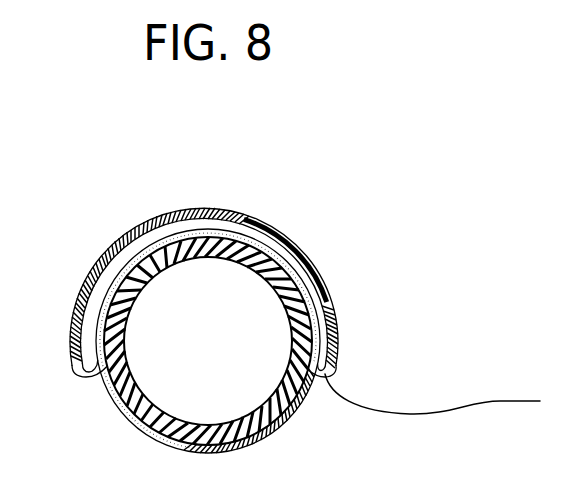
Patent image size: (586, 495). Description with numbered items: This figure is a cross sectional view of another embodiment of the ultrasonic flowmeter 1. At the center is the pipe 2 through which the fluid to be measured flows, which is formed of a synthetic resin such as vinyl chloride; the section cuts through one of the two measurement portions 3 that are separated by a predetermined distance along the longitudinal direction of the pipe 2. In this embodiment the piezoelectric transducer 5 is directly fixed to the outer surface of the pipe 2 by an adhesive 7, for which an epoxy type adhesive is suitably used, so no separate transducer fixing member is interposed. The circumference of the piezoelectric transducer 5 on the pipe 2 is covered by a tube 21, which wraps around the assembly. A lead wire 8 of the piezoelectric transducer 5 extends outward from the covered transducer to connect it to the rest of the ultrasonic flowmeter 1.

The ultrasonic flowmeter 1 is at (314, 206).
The pipe 2 is at (210, 437).
The measurement portion 3 is at (88, 217).
The piezoelectric transducer 5 is at (220, 227).
The adhesive 7 is at (305, 295).
The lead wire 8 is at (410, 413).
The tube 21 is at (167, 203).